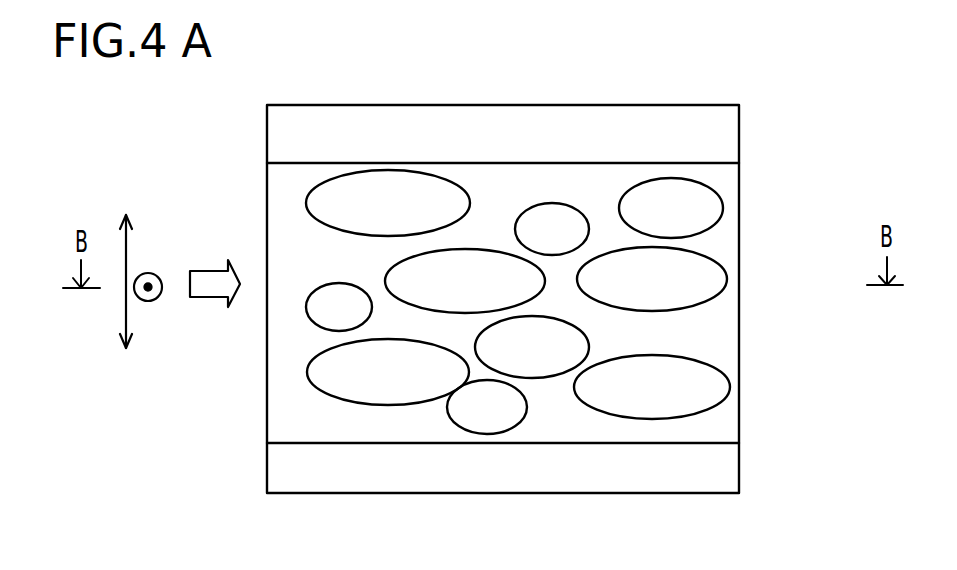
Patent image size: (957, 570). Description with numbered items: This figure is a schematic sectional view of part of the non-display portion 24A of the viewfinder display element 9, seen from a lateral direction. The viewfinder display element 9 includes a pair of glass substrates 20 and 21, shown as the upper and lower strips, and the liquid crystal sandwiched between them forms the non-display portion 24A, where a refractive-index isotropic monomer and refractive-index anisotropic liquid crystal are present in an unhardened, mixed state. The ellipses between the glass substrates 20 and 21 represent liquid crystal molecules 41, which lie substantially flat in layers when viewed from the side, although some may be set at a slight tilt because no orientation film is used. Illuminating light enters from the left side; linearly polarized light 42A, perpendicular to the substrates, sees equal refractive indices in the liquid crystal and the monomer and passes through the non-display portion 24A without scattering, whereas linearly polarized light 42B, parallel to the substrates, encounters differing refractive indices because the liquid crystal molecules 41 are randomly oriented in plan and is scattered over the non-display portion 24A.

The viewfinder display element 9 is at (660, 88).
The glass substrate 20 is at (582, 115).
The glass substrate 21 is at (684, 472).
The non-display portion 24A is at (775, 166).
The liquid crystal molecule 41 is at (717, 277).
The linearly polarized light 42A is at (122, 318).
The linearly polarized light 42B is at (155, 300).